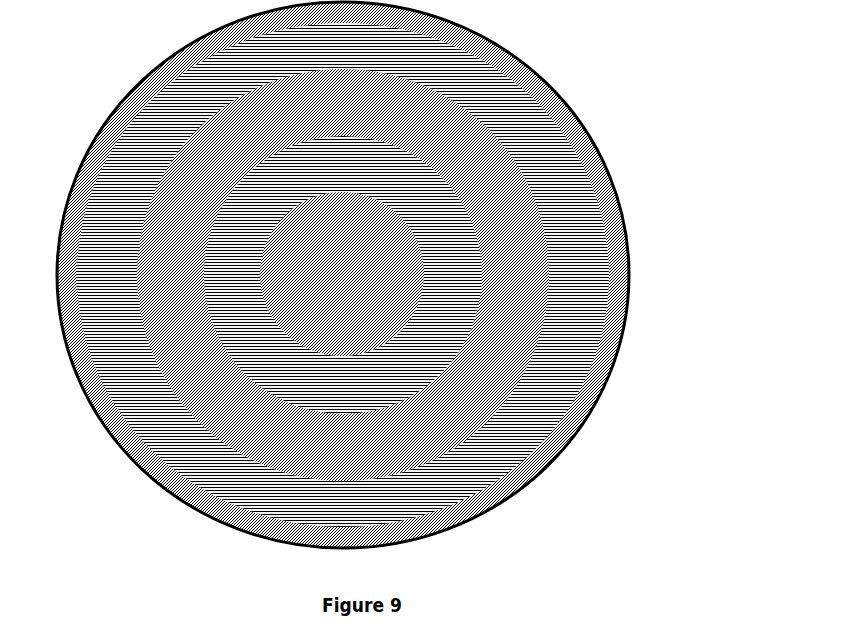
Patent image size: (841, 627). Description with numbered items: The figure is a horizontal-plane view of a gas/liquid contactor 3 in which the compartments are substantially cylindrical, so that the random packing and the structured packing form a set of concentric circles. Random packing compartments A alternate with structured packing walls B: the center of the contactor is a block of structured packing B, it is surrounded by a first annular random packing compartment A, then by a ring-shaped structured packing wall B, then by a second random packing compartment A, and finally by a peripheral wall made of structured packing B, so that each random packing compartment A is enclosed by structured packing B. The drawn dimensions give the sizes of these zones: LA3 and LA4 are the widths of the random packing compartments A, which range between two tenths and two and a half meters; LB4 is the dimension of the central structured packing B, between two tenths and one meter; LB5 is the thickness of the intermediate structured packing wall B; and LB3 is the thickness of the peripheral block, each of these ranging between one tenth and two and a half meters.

The gas/liquid contactor 3 is at (390, 275).
The random packing compartment A is at (620, 185).
The structured packing wall B is at (388, 305).
The dimension of random packing compartment LA3 is at (483, 279).
The dimension of random packing compartment LA4 is at (612, 285).
The dimension of peripheral block LB3 is at (137, 460).
The dimension of structured packing wall LB4 is at (340, 190).
The dimension of structured packing wall LB5 is at (192, 268).